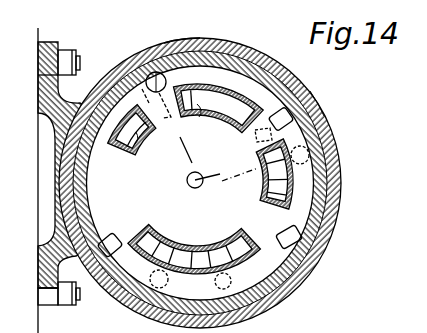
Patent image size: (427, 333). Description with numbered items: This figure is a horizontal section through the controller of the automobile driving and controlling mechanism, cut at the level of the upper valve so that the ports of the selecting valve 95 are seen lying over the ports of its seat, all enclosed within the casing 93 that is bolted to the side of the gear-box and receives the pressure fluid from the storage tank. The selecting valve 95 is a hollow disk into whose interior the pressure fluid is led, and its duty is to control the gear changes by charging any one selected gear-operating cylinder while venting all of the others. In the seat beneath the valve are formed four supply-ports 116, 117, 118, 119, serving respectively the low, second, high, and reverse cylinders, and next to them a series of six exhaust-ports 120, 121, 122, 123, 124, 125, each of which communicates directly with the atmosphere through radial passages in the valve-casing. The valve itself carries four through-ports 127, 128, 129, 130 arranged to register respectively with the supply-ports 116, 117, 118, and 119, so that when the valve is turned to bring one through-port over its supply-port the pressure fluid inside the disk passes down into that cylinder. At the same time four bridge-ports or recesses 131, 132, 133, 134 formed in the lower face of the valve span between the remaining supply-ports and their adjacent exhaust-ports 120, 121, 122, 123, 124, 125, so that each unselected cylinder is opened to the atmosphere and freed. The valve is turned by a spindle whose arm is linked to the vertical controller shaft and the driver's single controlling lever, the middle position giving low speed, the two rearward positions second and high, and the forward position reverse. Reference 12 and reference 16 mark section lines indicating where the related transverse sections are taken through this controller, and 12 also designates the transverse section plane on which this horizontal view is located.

The lever arm 12 is at (143, 47).
The pivot shaft 16 is at (368, 195).
The casing 93 is at (253, 54).
The selecting valve 95 is at (302, 281).
The supply-port 116 is at (108, 64).
The supply-port 117 is at (266, 164).
The supply-port 118 is at (215, 250).
The supply-port 119 is at (179, 250).
The exhaust-port 120 is at (140, 144).
The exhaust-port 121 is at (199, 117).
The exhaust-port 122 is at (322, 111).
The exhaust-port 123 is at (267, 188).
The exhaust-port 124 is at (193, 247).
The exhaust-port 125 is at (159, 230).
The through-port 127 is at (180, 47).
The through-port 128 is at (316, 110).
The through-port 129 is at (301, 240).
The through-port 130 is at (108, 234).
The bridge-port 131 is at (121, 150).
The bridge-port 132 is at (213, 93).
The bridge-port 133 is at (264, 205).
The bridge-port 134 is at (231, 280).